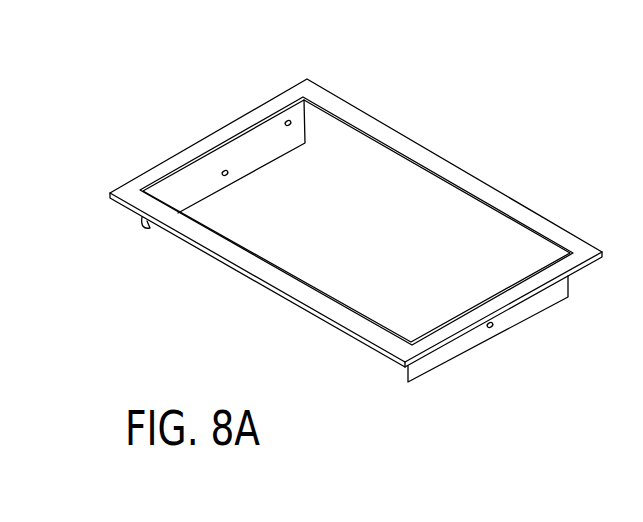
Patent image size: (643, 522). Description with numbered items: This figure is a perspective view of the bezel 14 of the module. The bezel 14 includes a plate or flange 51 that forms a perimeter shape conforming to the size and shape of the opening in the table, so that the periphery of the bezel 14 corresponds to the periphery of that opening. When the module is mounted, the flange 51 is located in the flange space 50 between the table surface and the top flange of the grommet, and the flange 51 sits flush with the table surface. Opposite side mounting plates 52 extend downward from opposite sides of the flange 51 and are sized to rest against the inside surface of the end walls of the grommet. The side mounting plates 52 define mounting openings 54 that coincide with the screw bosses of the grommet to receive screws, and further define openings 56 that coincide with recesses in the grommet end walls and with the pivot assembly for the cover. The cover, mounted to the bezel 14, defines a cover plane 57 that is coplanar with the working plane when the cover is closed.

The bezel 14 is at (133, 107).
The flange space 50 is at (365, 346).
The flange 51 is at (243, 253).
The side mounting plates 52 is at (267, 152).
The mounting openings 54 is at (228, 177).
The openings 56 is at (292, 121).
The cover plane 57 is at (482, 205).